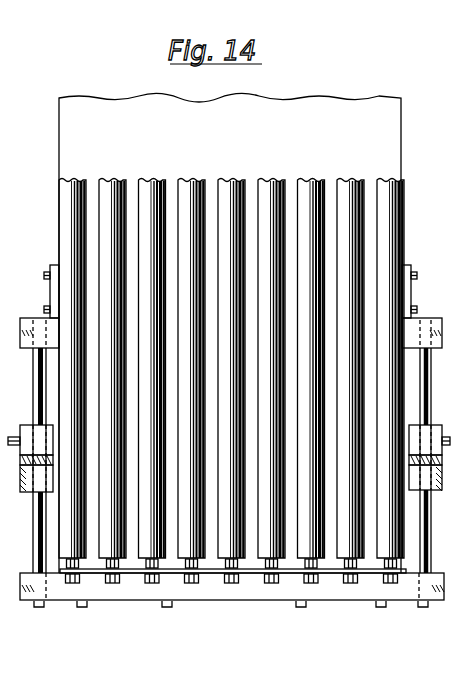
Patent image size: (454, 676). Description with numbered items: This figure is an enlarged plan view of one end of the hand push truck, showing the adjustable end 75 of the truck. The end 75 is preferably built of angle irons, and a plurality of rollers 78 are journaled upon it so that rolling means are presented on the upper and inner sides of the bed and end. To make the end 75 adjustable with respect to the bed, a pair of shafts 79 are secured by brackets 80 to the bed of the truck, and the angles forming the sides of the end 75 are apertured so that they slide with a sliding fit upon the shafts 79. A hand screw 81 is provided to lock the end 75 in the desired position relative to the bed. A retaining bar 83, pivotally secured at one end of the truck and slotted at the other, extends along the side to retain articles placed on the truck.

The retaining bar 83 is at (0, 161).
The rollers 78 is at (242, 180).
The brackets 80 is at (30, 318).
The shafts 79 is at (27, 364).
The end 75 is at (22, 492).
The hand screw 81 is at (22, 440).